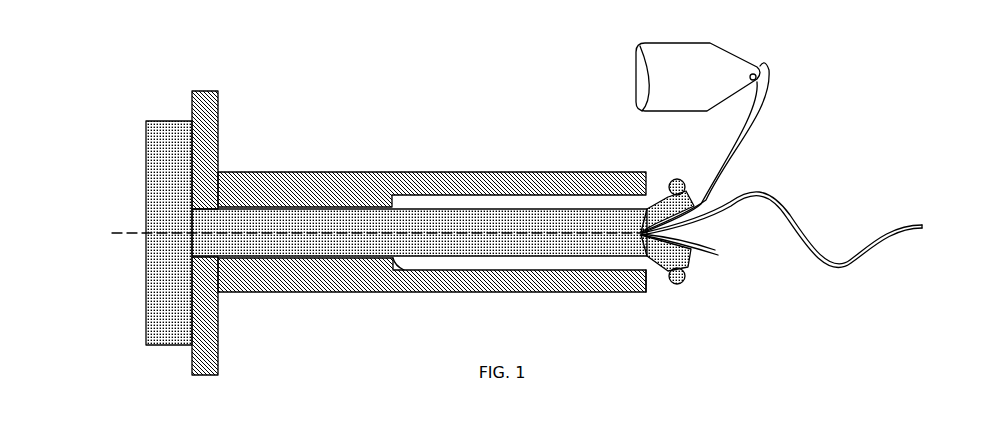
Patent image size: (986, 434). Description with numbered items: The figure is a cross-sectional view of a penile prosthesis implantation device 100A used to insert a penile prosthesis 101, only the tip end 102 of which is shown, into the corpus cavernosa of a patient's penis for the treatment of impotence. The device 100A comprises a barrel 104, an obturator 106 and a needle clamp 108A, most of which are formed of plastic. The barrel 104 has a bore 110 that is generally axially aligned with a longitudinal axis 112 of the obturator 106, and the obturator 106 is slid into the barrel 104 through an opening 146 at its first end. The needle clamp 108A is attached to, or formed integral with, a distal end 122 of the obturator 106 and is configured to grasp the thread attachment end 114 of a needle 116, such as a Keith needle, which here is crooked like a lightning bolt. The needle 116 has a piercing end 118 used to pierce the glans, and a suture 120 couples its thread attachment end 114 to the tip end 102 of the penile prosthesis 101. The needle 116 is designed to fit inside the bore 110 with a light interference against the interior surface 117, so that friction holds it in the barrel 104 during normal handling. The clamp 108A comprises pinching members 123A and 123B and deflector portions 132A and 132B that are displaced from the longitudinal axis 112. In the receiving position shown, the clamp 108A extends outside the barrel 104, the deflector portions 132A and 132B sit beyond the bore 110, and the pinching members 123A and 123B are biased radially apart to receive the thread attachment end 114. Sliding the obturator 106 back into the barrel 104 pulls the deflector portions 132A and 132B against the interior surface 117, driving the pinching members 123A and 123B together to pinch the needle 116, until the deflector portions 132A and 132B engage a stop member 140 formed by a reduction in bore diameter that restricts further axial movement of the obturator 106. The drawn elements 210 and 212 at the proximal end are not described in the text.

The penile prosthesis implantation device 100A is at (157, 93).
The penile prosthesis 101 is at (647, 45).
The tip end 102 is at (713, 52).
The barrel 104 is at (342, 175).
The obturator 106 is at (312, 243).
The needle clamp 108A is at (662, 284).
The bore 110 is at (450, 198).
The longitudinal axis 112 is at (128, 233).
The thread attachment end 114 is at (637, 229).
The needle 116 is at (778, 193).
The interior surface 117 is at (514, 196).
The piercing end 118 is at (922, 224).
The suture 120 is at (765, 115).
The distal end 122 is at (624, 262).
The pinching member 123A is at (688, 198).
The pinching member 123B is at (692, 268).
The deflector portion 132A is at (672, 179).
The deflector portion 132B is at (680, 284).
The stop member 140 is at (414, 280).
The opening 146 is at (647, 195).
The hub 210 is at (150, 163).
The flange 212 is at (171, 120).